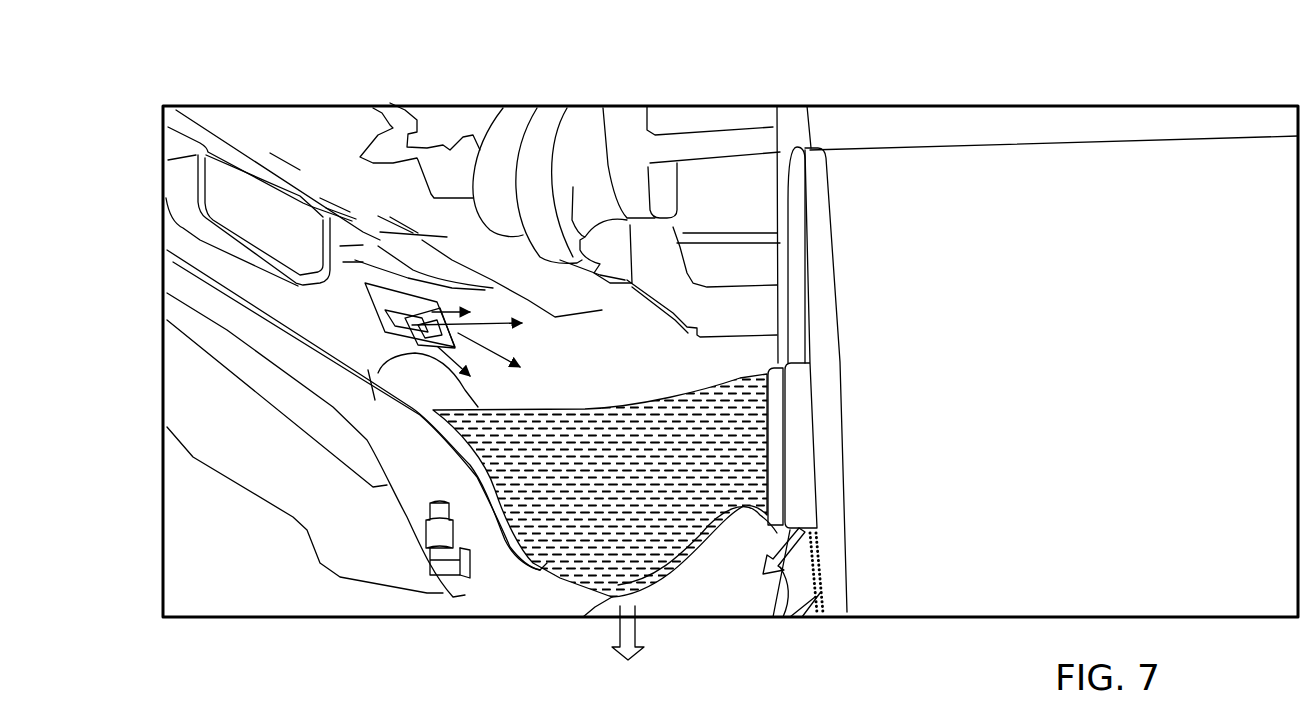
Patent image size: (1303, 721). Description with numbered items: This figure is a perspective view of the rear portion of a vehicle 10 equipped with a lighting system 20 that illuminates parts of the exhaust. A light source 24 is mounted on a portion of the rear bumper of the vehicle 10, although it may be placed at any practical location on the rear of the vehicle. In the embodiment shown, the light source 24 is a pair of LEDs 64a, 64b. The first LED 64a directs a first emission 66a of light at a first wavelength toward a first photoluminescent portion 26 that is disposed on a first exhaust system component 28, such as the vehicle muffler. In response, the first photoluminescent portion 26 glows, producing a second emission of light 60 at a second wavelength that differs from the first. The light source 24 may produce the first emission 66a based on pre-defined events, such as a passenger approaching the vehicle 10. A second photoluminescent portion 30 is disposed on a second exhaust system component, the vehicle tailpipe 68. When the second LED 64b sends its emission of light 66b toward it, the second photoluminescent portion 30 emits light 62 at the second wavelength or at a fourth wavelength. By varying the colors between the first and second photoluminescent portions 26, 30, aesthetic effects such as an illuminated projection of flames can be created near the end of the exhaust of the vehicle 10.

The vehicle 10 is at (942, 70).
The lighting system 20 is at (143, 232).
The light source 24 is at (360, 313).
The first photoluminescent portion 26 is at (824, 559).
The first exhaust system component 28 is at (1072, 454).
The second photoluminescent portion 30 is at (565, 558).
The second emission of light 60 is at (800, 625).
The emitted light 62 is at (621, 632).
The first LED 64a is at (387, 310).
The second LED 64b is at (427, 320).
The first emission of light 66a is at (435, 347).
The emission of light 66b is at (497, 322).
The vehicle tailpipe 68 is at (527, 540).